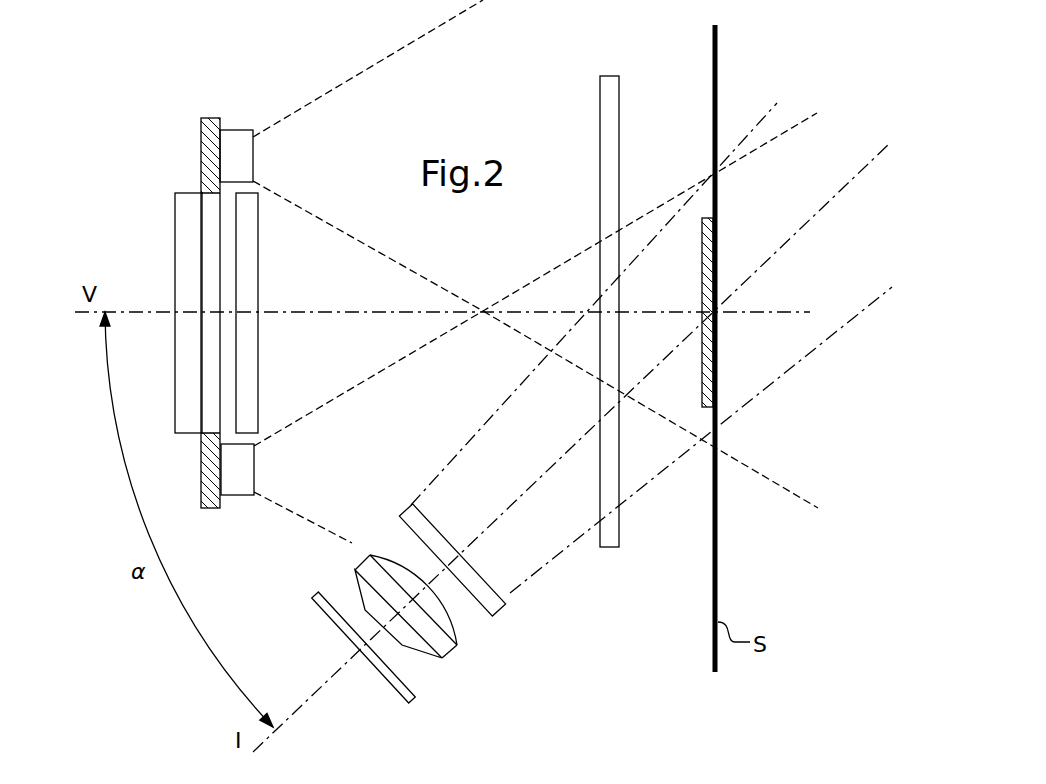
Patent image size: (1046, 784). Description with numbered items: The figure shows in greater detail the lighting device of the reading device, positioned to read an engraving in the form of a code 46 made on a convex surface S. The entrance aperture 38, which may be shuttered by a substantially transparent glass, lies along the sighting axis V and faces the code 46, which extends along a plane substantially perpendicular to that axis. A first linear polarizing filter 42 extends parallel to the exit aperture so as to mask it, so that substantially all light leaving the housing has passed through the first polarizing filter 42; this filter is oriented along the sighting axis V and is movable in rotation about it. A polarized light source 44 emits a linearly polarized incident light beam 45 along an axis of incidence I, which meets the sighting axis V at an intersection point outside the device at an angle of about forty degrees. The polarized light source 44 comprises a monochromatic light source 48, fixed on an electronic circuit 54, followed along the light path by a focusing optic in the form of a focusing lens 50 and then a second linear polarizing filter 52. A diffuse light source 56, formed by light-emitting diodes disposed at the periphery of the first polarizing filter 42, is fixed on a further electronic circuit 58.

The entrance aperture 38 is at (613, 522).
The first linear polarizing filter 42 is at (250, 253).
The polarized light source 44 is at (330, 573).
The linearly polarized incident light beam 45 is at (571, 533).
The code 46 is at (702, 232).
The monochromatic light source 48 is at (388, 650).
The focusing lens 50 is at (440, 617).
The second linear polarizing filter 52 is at (494, 592).
The electronic circuit 54 is at (381, 675).
The diffuse light source 56 is at (235, 142).
The electronic circuit 58 is at (200, 138).